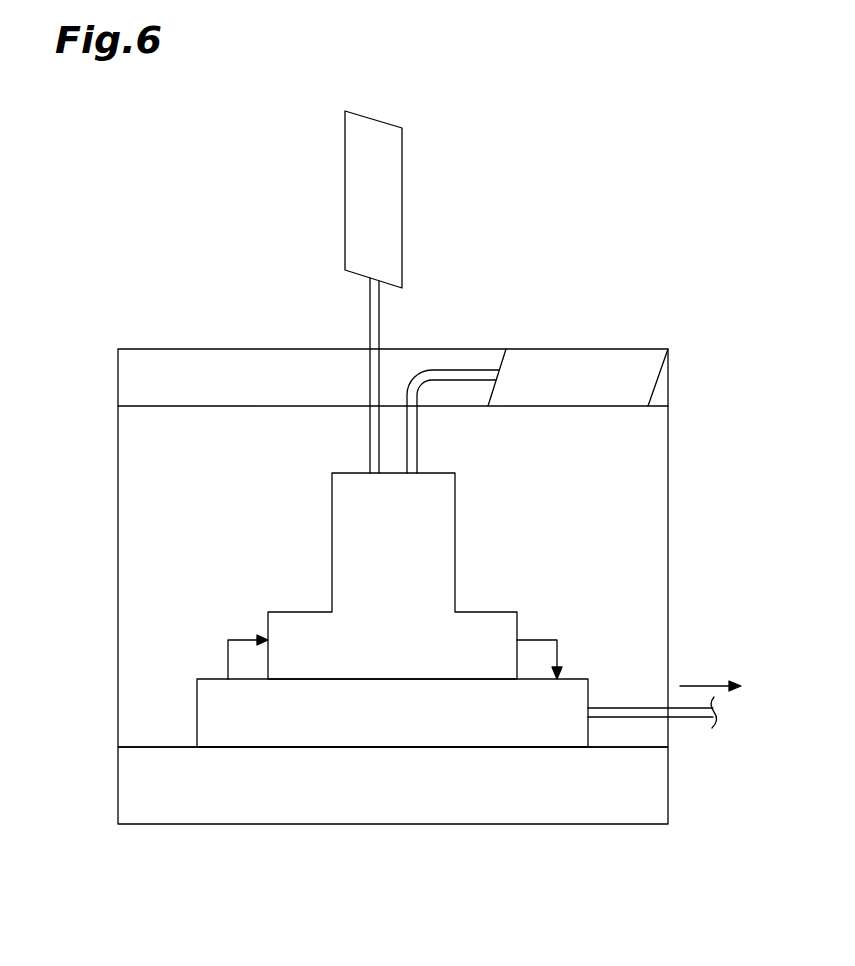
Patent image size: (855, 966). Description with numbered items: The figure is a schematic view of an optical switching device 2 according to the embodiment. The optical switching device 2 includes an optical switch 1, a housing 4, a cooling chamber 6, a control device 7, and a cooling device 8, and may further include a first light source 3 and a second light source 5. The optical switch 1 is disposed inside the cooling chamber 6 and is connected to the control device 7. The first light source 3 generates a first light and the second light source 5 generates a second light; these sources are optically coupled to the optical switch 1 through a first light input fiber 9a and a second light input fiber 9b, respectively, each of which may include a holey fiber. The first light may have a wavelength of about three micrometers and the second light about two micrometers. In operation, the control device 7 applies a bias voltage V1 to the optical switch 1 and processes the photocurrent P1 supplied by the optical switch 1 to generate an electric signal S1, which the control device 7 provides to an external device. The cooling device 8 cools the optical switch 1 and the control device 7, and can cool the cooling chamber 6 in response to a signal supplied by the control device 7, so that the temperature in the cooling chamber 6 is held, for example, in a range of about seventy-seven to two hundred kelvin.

The optical switch 1 is at (455, 535).
The optical switching device 2 is at (608, 226).
The first light source 3 is at (395, 205).
The housing 4 is at (425, 548).
The second light source 5 is at (582, 349).
The cooling chamber 6 is at (668, 453).
The control device 7 is at (578, 679).
The cooling device 8 is at (668, 787).
The first light input fiber 9a is at (369, 441).
The second light input fiber 9b is at (418, 441).
The bias voltage V1 is at (241, 639).
The photocurrent P1 is at (537, 639).
The electric signal S1 is at (707, 686).